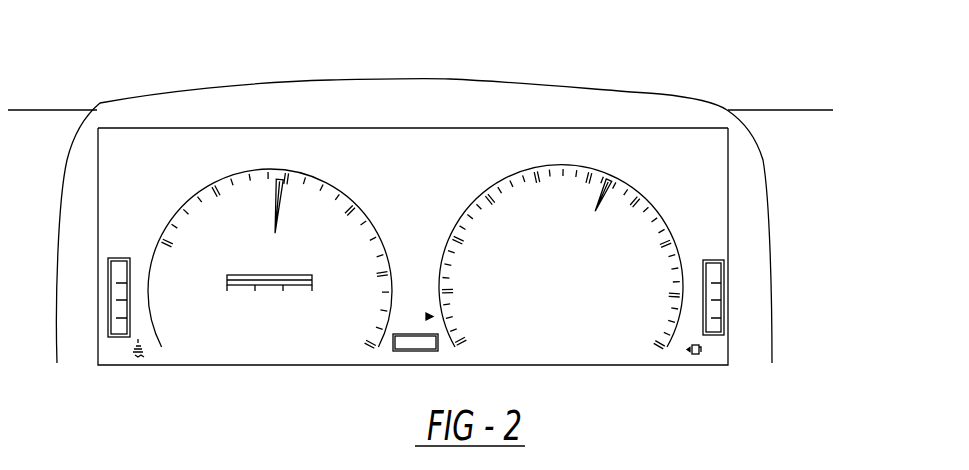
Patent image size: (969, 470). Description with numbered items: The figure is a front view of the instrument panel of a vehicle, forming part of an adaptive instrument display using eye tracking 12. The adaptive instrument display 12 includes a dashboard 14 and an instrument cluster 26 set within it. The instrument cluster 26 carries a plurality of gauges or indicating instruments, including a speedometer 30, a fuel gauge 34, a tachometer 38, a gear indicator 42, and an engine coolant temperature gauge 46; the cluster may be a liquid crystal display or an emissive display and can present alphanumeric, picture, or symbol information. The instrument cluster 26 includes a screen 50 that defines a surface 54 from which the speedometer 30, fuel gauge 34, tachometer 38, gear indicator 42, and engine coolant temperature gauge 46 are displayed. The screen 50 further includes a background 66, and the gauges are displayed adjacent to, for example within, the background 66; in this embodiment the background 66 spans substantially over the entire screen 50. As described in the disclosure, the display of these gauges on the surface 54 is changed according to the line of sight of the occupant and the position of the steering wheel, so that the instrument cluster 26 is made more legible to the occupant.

The adaptive instrument display using eye tracking 12 is at (416, 157).
The dashboard 14 is at (597, 84).
The instrument cluster 26 is at (218, 128).
The speedometer 30 is at (662, 223).
The fuel gauge 34 is at (723, 253).
The tachometer 38 is at (257, 169).
The gear indicator 42 is at (407, 318).
The engine coolant temperature gauge 46 is at (108, 350).
The screen 50 is at (638, 158).
The surface 54 is at (158, 217).
The background 66 is at (155, 173).